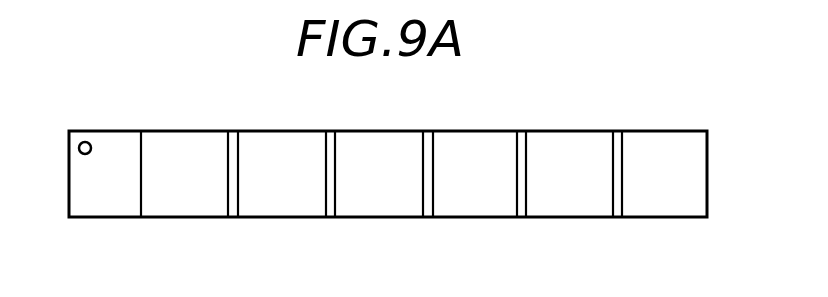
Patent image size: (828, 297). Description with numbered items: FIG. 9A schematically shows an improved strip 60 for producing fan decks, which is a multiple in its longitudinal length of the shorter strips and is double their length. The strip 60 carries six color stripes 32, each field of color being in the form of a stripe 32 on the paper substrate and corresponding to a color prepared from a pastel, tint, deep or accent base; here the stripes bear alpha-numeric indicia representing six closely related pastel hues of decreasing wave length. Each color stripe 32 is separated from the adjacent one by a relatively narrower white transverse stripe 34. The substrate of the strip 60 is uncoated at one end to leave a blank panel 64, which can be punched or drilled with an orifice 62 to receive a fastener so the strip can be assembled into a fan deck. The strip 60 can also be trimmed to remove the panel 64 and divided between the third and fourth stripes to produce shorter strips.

The strip 60 is at (416, 181).
The color stripe 32 is at (355, 147).
The white transverse stripe 34 is at (617, 130).
The orifice 62 is at (85, 141).
The blank panel 64 is at (113, 195).